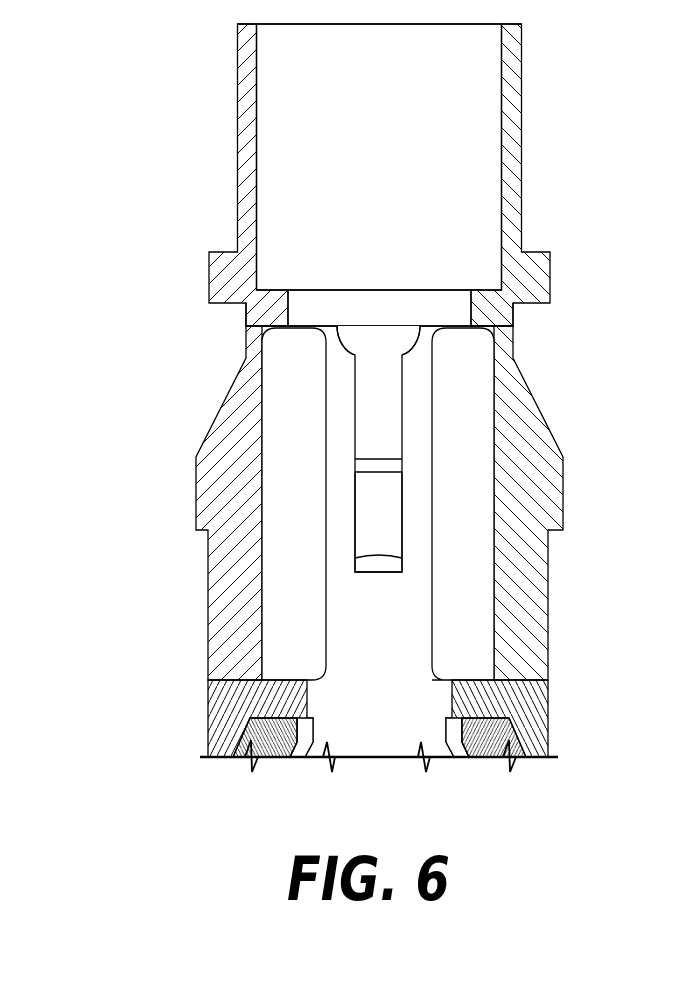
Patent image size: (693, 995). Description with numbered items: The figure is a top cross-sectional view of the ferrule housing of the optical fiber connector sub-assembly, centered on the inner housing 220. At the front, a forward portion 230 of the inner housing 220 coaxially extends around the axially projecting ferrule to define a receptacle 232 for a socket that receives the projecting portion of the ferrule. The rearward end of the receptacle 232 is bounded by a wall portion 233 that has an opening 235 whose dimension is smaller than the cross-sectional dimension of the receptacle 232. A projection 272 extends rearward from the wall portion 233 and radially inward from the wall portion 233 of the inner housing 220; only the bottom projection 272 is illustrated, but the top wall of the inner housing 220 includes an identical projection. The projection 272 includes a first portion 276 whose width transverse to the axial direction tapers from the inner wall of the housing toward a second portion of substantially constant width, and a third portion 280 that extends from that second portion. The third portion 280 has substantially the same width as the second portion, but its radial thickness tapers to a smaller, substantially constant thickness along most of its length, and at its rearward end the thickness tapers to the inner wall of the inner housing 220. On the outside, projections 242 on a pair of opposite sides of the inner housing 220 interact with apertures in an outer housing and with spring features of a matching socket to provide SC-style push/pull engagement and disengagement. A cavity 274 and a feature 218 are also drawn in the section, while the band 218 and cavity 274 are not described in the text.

The forward portion 230 is at (510, 133).
The receptacle 232 is at (282, 133).
The opening 235 is at (304, 284).
The wall portion 233 is at (270, 308).
The inner housing 220 is at (528, 400).
The annular cavity 274 is at (285, 493).
The projections 242 is at (202, 513).
The projection 272 is at (339, 406).
The first portion 276 is at (407, 342).
The band / seal on stem 218 is at (388, 427).
The third portion 280 is at (385, 518).